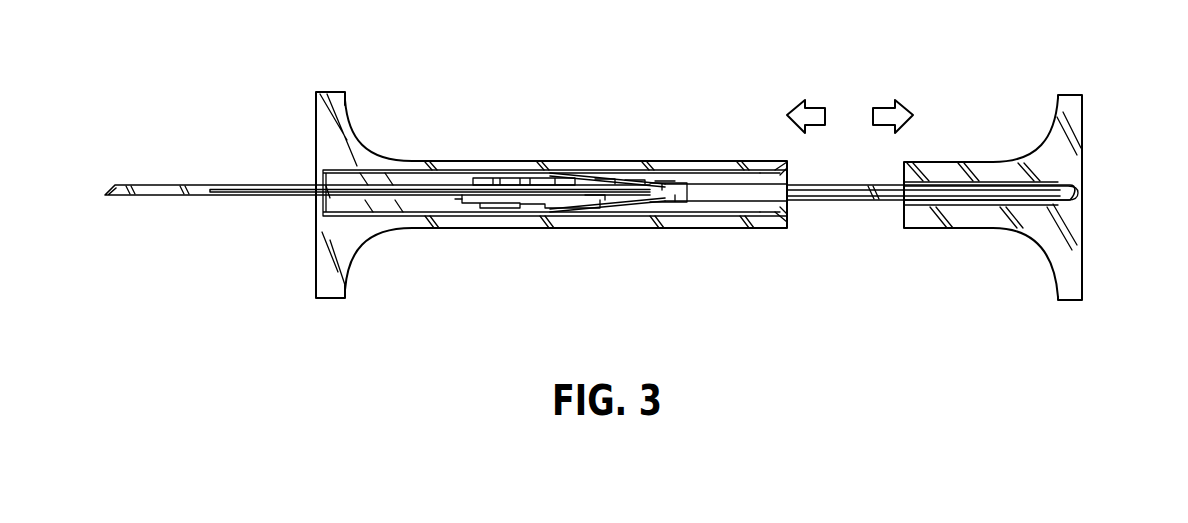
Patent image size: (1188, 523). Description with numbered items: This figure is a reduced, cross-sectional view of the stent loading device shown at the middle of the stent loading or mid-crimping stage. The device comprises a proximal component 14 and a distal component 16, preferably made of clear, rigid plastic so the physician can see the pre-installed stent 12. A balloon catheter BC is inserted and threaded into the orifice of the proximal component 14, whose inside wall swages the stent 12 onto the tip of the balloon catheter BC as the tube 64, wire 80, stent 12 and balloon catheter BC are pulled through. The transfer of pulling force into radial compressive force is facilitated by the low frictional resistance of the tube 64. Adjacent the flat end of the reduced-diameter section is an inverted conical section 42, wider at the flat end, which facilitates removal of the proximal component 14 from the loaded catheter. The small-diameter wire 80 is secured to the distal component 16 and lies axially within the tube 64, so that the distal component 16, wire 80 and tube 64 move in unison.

The proximal component 14 is at (352, 263).
The distal component 16 is at (1086, 127).
The balloon catheter BC is at (165, 197).
The wire 80 is at (262, 197).
The stent 12 is at (658, 208).
The inverted conical section 42 is at (782, 207).
The tube 64 is at (835, 202).